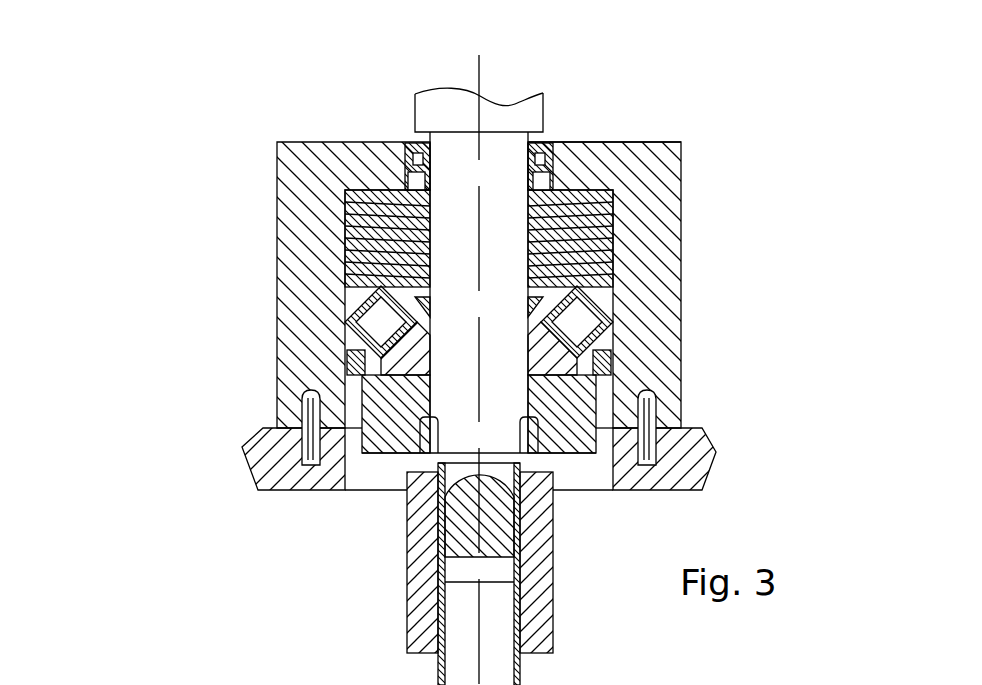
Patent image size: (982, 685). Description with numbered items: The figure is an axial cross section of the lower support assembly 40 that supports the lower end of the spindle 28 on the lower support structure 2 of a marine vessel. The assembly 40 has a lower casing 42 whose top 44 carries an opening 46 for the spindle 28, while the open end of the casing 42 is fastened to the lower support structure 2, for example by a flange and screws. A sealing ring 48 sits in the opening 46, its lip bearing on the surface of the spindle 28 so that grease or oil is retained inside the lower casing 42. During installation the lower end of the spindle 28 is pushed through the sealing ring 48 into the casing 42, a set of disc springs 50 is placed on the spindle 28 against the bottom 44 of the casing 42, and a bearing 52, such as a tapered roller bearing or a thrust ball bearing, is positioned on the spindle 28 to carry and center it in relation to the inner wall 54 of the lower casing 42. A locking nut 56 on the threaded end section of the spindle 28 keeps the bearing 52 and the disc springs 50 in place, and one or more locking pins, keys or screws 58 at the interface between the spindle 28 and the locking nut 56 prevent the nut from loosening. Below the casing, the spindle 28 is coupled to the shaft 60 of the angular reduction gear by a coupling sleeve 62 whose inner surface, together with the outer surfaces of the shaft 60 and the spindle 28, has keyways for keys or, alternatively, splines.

The lower support structure 2 is at (280, 445).
The spindle 28 is at (463, 148).
The lower support assembly 40 is at (700, 98).
The lower casing 42 is at (302, 225).
The top of the lower casing 44 is at (405, 150).
The opening 46 is at (538, 177).
The sealing ring 48 is at (553, 143).
The set of disc springs 50 is at (347, 255).
The bearing 52 is at (578, 323).
The inner wall of the lower casing 54 is at (350, 310).
The locking nut 56 is at (578, 403).
The locking pins, keys or screws 58 is at (648, 433).
The shaft of the angular reduction gear 60 is at (462, 640).
The coupling sleeve 62 is at (433, 540).